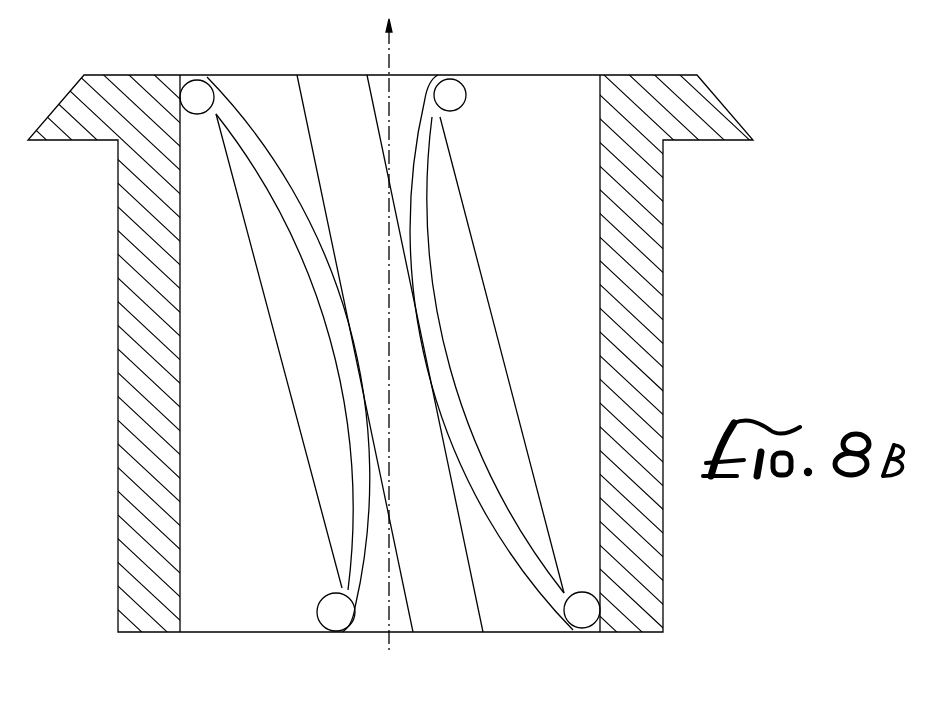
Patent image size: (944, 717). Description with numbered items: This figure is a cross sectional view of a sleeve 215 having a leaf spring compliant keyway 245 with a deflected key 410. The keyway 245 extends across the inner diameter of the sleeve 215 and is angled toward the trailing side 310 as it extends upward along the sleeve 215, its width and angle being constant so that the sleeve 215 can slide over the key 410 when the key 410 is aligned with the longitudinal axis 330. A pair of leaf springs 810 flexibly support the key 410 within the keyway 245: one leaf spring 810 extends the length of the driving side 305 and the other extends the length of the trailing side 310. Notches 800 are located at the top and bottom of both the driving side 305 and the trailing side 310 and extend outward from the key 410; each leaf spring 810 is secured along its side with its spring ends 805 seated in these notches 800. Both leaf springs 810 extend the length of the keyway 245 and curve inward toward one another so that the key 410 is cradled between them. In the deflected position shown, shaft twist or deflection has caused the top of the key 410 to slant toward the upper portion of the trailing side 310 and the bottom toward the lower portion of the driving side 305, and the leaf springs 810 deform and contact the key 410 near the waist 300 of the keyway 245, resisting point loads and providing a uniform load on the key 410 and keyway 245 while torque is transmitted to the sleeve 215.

The sleeve 215 is at (637, 95).
The keyway 245 is at (500, 342).
The waist 300 is at (576, 355).
The driving side 305 is at (576, 355).
The trailing side 310 is at (275, 355).
The longitudinal axis 330 is at (393, 28).
The key 410 is at (369, 190).
The notches 800 is at (180, 100).
The spring ends 805 is at (423, 361).
The leaf springs 810 is at (357, 425).